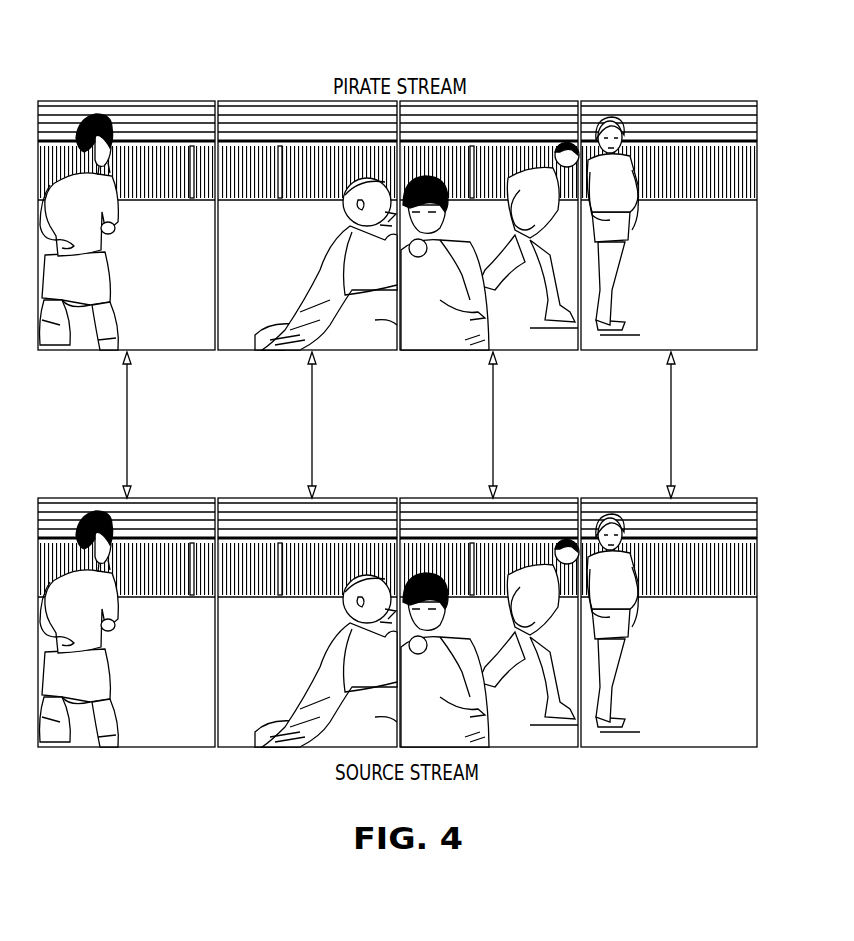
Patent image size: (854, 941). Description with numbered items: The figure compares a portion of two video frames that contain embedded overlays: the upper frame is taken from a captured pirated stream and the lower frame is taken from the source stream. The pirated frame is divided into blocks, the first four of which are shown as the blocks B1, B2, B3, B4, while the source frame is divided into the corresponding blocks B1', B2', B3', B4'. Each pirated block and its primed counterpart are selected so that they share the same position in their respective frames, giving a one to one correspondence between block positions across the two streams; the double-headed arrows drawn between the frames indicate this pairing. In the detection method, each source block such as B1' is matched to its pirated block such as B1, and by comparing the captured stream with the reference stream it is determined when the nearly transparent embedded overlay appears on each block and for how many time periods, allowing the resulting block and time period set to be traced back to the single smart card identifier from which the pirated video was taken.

The first block of the pirated stream video frame B1 is at (126, 225).
The second block of the pirated stream video frame B2 is at (307, 225).
The third block of the pirated stream video frame B3 is at (489, 225).
The fourth block of the pirated stream video frame B4 is at (669, 225).
The first block of the source stream video frame B1' is at (126, 622).
The second block of the source stream video frame B2' is at (307, 622).
The third block of the source stream video frame B3' is at (489, 622).
The fourth block of the source stream video frame B4' is at (669, 622).